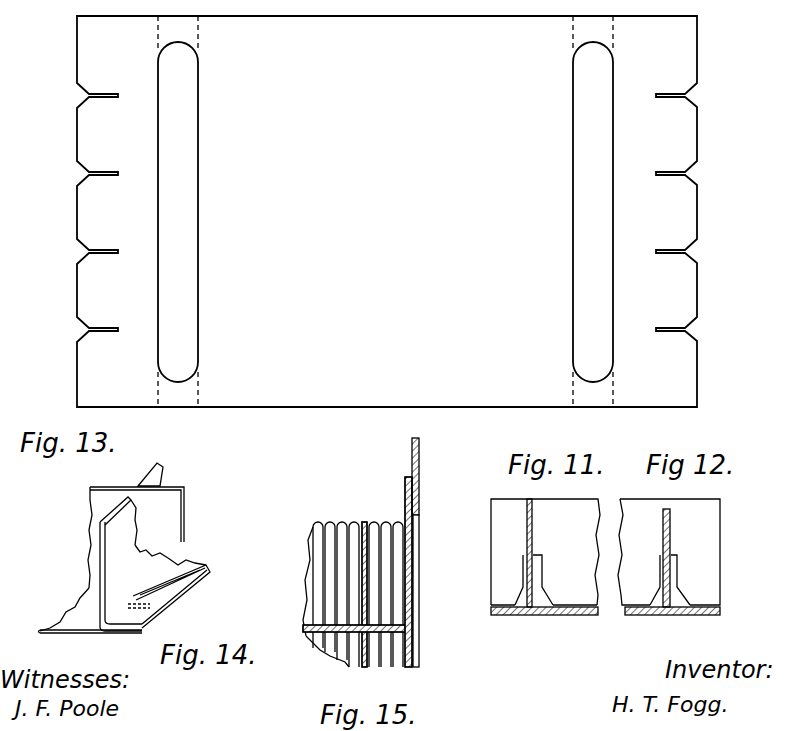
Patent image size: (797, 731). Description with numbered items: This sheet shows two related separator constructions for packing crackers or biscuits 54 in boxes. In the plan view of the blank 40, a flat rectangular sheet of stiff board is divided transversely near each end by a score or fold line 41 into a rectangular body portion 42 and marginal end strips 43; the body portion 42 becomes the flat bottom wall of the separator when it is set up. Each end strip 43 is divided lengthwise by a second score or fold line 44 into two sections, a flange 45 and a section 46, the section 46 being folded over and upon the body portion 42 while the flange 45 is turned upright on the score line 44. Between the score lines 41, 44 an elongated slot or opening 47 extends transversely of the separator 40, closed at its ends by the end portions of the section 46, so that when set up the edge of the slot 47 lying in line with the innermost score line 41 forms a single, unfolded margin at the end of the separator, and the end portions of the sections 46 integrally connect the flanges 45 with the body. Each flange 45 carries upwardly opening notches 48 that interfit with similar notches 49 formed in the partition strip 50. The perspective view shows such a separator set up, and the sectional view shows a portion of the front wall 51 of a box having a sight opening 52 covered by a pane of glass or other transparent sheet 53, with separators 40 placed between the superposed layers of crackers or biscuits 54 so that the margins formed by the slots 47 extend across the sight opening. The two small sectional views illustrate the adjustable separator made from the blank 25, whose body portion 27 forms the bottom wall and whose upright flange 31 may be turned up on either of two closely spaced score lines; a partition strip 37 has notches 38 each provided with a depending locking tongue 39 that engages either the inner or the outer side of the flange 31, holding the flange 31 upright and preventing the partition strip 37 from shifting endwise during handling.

In FIG. 13, the blank 40 is at (74, 50).
In FIG. 14, the blank 40 is at (60, 600).
In FIG. 13, the score or fold line 41 is at (199, 38).
In FIG. 13, the body portion 42 is at (318, 385).
In FIG. 14, the body portion 42 is at (78, 626).
In FIG. 15, the body portion 42 is at (305, 628).
In FIG. 13, the marginal end strip 43 is at (137, 407).
In FIG. 13, the score or fold line 44 is at (156, 40).
In FIG. 13, the flange 45 is at (96, 377).
In FIG. 14, the flange 45 is at (158, 472).
In FIG. 15, the flange 45 is at (366, 522).
In FIG. 13, the section 46 is at (183, 394).
In FIG. 14, the section 46 is at (128, 614).
In FIG. 13, the slot or opening 47 is at (183, 205).
In FIG. 14, the slot or opening 47 is at (178, 567).
In FIG. 15, the slot or opening 47 is at (420, 624).
In FIG. 13, the notch 48 is at (85, 97).
In FIG. 14, the notch 48 is at (138, 484).
In FIG. 14, the notch 49 is at (138, 546).
In FIG. 14, the partition strip 50 is at (95, 507).
In FIG. 15, the front wall 51 is at (420, 442).
In FIG. 15, the sight opening 52 is at (419, 577).
In FIG. 15, the transparent sheet 53 is at (407, 478).
In FIG. 15, the crackers or biscuits 54 is at (340, 522).
In FIG. 11, the blank 25 is at (508, 618).
In FIG. 12, the blank 25 is at (712, 618).
In FIG. 11, the body portion 27 is at (575, 617).
In FIG. 12, the body portion 27 is at (645, 617).
In FIG. 11, the upright flange 31 is at (536, 538).
In FIG. 12, the upright flange 31 is at (670, 527).
In FIG. 11, the partition strip 37 is at (504, 518).
In FIG. 12, the partition strip 37 is at (705, 540).
In FIG. 11, the notch 38 is at (541, 590).
In FIG. 12, the notch 38 is at (677, 590).
In FIG. 11, the locking tongue 39 is at (538, 556).
In FIG. 12, the locking tongue 39 is at (675, 557).